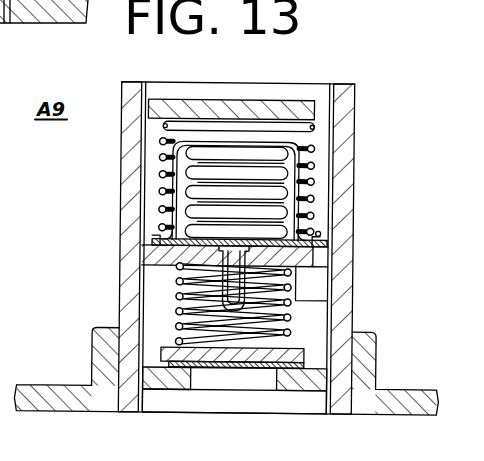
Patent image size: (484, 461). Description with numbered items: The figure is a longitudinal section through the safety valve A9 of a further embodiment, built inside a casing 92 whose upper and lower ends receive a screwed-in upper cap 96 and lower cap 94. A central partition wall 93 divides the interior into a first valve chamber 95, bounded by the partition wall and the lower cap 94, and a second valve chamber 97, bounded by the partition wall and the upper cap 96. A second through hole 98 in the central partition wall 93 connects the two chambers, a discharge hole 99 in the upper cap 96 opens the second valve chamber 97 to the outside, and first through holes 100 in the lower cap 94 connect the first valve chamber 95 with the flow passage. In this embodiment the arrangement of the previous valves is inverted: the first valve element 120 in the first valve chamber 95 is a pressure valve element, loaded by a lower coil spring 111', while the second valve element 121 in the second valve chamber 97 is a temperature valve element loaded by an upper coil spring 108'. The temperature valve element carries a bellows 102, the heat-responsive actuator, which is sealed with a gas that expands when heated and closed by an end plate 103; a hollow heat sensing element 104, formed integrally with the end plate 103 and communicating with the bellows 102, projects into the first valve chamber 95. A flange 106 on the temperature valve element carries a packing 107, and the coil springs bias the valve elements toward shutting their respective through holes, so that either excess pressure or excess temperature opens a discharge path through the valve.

The upper cap 96 is at (284, 105).
The first valve chamber 95 is at (317, 294).
The discharge hole 99 is at (163, 108).
The upper coil spring 108' is at (290, 123).
The second valve element 121 is at (317, 146).
The second valve chamber 97 is at (318, 178).
The bellows 102 is at (288, 197).
The packing 107 is at (152, 242).
The flange 106 is at (150, 240).
The end plate 103 is at (322, 240).
The first through holes 100 is at (146, 257).
The casing 92 is at (312, 262).
The heat sensing element 104 is at (232, 286).
The lower cap 94 is at (293, 318).
The lower coil spring 111' is at (288, 347).
The first valve element 120 is at (305, 364).
The central partition wall 93 is at (298, 383).
The second through hole 98 is at (228, 384).